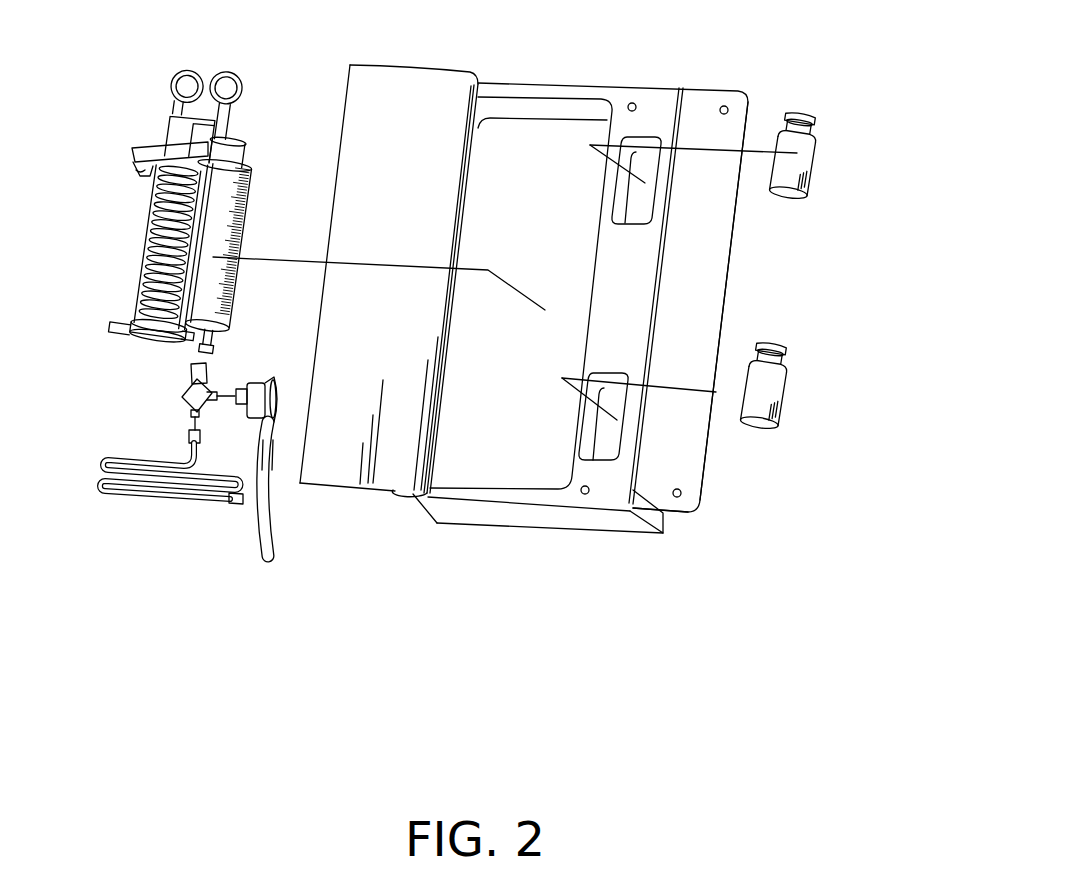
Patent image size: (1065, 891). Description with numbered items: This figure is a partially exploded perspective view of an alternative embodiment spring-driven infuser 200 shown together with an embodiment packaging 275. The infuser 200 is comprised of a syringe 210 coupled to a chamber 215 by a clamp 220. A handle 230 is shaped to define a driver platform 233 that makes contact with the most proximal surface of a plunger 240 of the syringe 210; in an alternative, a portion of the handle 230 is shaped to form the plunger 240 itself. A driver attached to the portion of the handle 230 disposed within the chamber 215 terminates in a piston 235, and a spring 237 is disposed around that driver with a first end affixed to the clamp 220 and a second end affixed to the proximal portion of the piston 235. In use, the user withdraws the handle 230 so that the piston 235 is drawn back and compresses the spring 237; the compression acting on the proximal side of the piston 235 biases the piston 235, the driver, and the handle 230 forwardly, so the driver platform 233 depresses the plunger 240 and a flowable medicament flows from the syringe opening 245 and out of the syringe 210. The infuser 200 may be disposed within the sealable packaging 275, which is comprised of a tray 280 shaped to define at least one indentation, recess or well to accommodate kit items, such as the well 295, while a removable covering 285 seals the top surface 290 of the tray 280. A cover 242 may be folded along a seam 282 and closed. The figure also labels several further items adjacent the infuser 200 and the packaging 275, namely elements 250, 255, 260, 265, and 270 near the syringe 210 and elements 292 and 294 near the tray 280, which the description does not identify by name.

The spring-driven infuser 200 is at (195, 45).
The syringe 210 is at (250, 195).
The chamber 215 is at (162, 345).
The clamp 220 is at (143, 152).
The handle 230 is at (238, 108).
The driver platform 233 is at (243, 130).
The piston 235 is at (163, 333).
The spring 237 is at (145, 268).
The plunger 240 is at (240, 143).
The cover 242 is at (693, 467).
The syringe opening 245 is at (232, 330).
The stopcock 250 is at (213, 388).
The tubing 255 is at (272, 548).
The cap 260 is at (280, 520).
The tubing connector 265 is at (277, 493).
The coiled tubing 270 is at (160, 465).
The sealable packaging 275 is at (662, 70).
The tray 280 is at (675, 95).
The seam 282 is at (640, 495).
The removable covering 285 is at (415, 78).
The top surface 290 is at (510, 495).
The vials 292 is at (780, 377).
The slots 294 is at (627, 377).
The well 295 is at (535, 135).